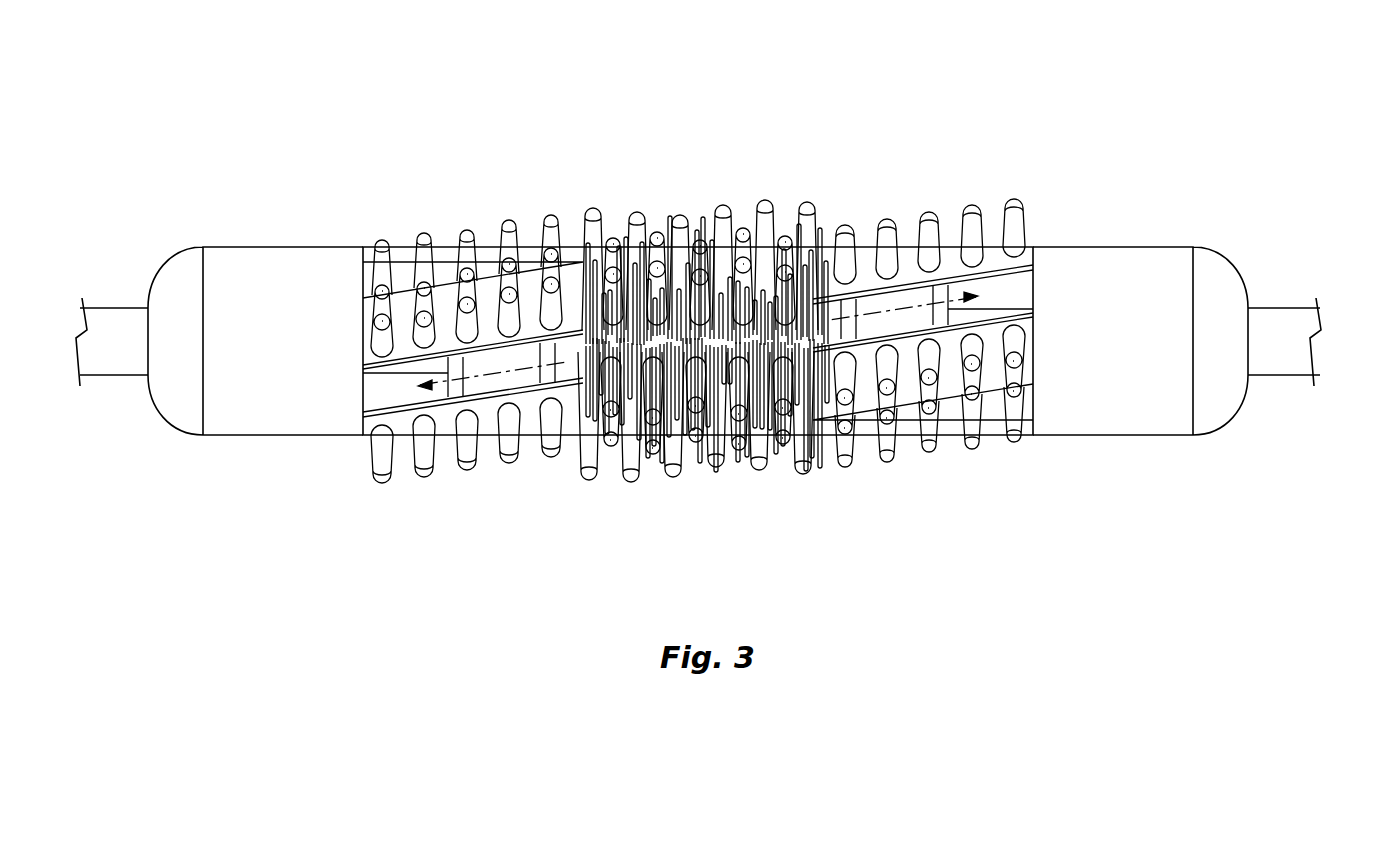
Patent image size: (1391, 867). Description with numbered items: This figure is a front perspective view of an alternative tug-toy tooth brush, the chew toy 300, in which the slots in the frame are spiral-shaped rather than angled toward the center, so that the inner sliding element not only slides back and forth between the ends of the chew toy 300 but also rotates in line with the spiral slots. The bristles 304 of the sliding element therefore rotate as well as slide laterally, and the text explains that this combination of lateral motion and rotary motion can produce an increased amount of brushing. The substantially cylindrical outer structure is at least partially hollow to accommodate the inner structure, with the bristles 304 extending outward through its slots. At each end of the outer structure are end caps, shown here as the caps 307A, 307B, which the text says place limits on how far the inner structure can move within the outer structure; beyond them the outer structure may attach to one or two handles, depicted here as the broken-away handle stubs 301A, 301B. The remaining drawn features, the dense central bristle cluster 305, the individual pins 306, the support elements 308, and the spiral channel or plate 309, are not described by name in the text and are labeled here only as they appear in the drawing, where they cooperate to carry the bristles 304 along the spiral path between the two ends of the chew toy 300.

The chew toy 300 is at (481, 126).
The inlet pipe 301A is at (112, 318).
The outlet pipe 301B is at (1282, 318).
The bristles 304 is at (548, 215).
The central brush / rod bundle 305 is at (705, 217).
The pins 306 is at (405, 277).
The left end cap 307A is at (258, 255).
The right end cap 307B is at (1135, 255).
The support plate 308 is at (832, 333).
The helical plate 309 is at (872, 300).